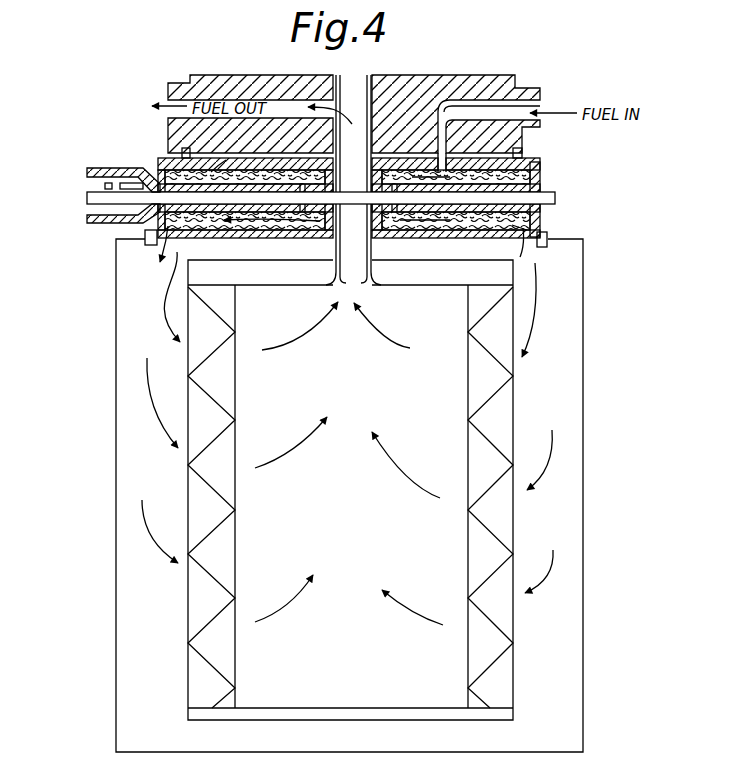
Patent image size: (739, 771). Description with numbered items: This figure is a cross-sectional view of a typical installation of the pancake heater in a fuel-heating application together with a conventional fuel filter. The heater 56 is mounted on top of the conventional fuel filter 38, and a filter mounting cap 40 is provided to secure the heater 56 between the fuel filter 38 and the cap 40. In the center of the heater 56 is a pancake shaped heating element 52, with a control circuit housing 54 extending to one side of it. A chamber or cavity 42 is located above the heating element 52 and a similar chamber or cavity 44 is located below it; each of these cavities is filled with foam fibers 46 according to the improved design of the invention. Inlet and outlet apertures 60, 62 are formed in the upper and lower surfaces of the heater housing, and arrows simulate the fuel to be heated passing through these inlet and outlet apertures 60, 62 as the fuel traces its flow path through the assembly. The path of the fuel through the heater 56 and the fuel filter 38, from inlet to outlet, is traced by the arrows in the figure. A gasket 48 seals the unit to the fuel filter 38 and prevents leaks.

The fuel filter 38 is at (584, 447).
The filter mounting cap 40 is at (468, 76).
The chamber or cavity 42 is at (540, 168).
The chamber or cavity 44 is at (540, 221).
The foam fibers 46 is at (540, 160).
The gasket 48 is at (147, 233).
The pancake shaped heating element 52 is at (555, 197).
The control circuit housing 54 is at (125, 170).
The heater 56 is at (547, 182).
The inlet aperture 60 is at (452, 176).
The outlet aperture 62 is at (527, 242).